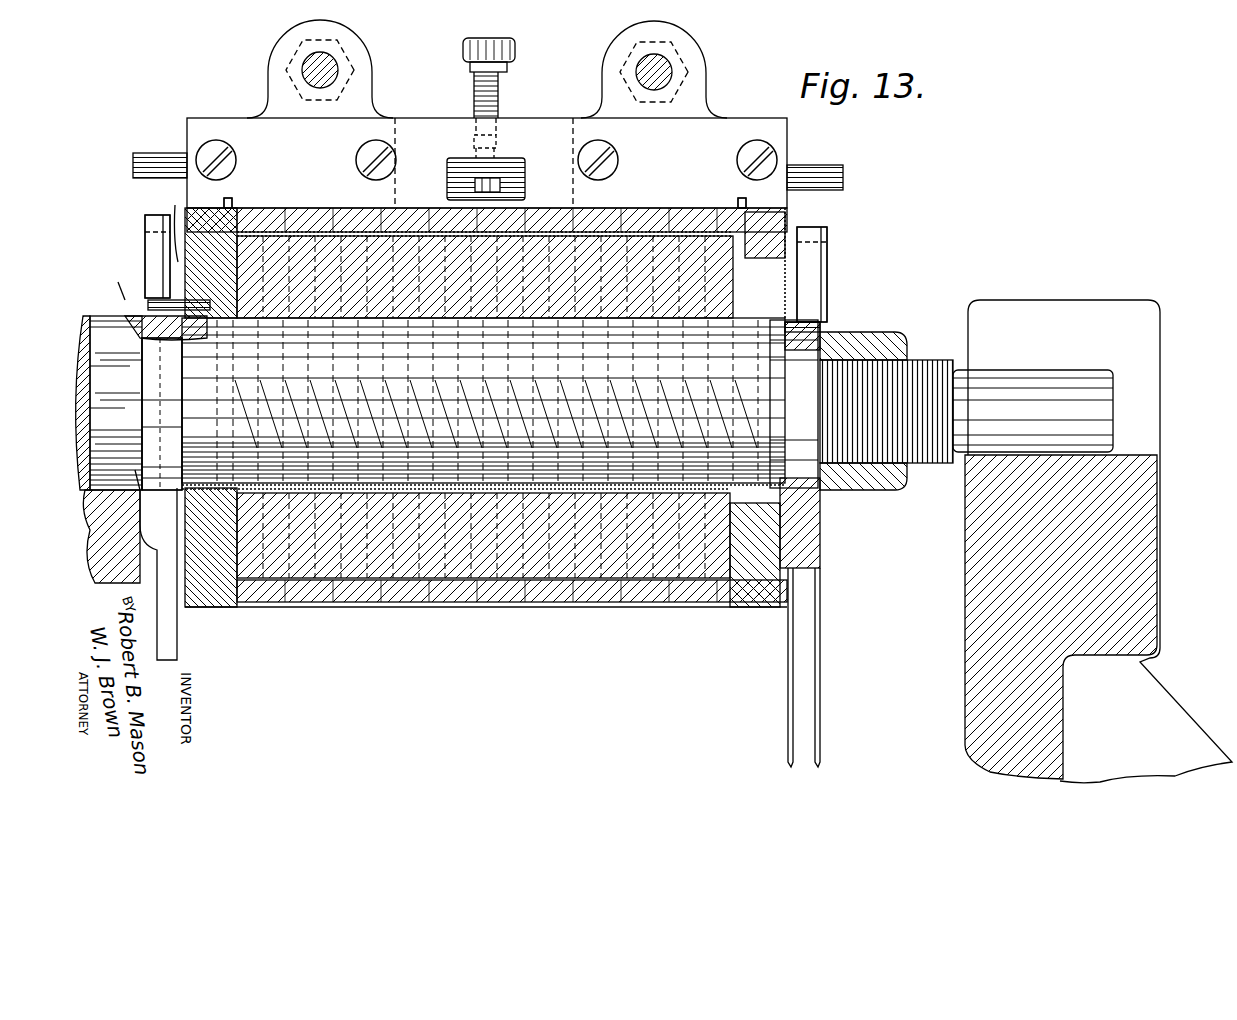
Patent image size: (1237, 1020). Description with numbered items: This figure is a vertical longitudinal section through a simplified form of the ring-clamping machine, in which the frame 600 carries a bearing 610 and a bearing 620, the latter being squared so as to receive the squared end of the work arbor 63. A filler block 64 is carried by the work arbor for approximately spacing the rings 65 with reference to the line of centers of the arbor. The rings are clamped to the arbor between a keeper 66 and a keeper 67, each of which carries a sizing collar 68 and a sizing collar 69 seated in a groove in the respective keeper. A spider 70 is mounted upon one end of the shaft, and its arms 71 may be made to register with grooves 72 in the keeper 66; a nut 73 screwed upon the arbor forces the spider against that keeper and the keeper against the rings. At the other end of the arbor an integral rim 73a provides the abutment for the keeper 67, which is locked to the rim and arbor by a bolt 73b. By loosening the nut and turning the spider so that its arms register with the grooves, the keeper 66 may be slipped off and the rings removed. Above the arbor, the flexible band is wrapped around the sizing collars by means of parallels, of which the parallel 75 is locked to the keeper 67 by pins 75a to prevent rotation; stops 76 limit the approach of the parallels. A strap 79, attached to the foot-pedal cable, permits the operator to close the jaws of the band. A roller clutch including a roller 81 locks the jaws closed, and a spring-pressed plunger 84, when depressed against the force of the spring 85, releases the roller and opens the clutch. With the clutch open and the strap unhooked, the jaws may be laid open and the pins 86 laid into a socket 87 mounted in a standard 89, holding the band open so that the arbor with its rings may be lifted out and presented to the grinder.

The work arbor 63 is at (102, 375).
The filler block 64 is at (690, 300).
The rings 65 is at (674, 210).
The keeper 66 is at (775, 225).
The keeper 67 is at (176, 212).
The sizing collar 68 is at (762, 208).
The sizing collar 69 is at (204, 210).
The spider 70 is at (820, 330).
The arms 71 is at (808, 325).
The grooves 72 is at (782, 290).
The nut 73 is at (876, 336).
The integral rim 73a is at (172, 398).
The bolt 73b is at (148, 308).
The parallel 75 is at (560, 122).
The pins 75a is at (236, 198).
The stops 76 is at (335, 62).
The strap 79 is at (487, 173).
The roller 81 is at (522, 178).
The spring-pressed plunger 84 is at (474, 142).
The spring 85 is at (476, 100).
The pins 86 is at (150, 166).
The socket 87 is at (146, 228).
The standard 89 is at (152, 246).
The frame 600 is at (1120, 600).
The bearing 610 is at (1130, 392).
The bearing 620 is at (118, 290).